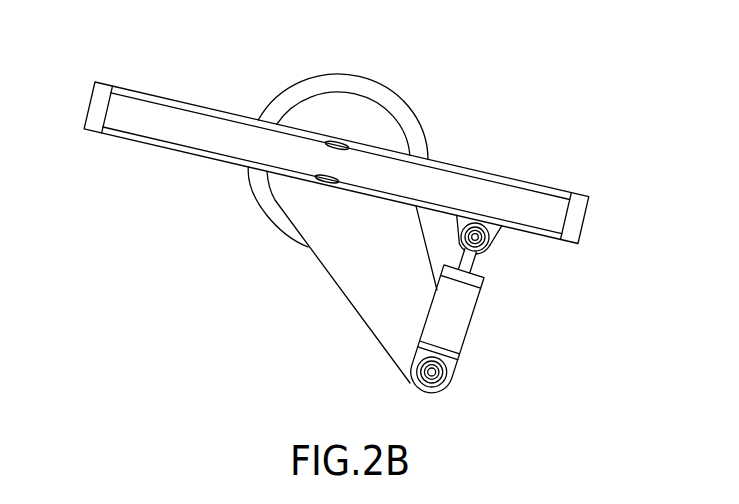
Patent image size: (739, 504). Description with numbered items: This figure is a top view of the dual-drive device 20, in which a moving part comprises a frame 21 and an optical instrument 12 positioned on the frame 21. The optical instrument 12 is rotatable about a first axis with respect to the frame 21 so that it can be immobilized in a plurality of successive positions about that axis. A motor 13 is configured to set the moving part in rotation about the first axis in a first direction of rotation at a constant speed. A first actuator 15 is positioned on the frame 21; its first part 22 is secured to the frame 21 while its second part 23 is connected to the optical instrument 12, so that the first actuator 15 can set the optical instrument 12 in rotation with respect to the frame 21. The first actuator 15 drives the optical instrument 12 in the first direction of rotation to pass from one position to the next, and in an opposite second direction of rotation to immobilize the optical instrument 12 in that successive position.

The dual-drive device 20 is at (104, 72).
The optical instrument 12 is at (131, 117).
The motor 13 is at (270, 103).
The frame 21 is at (326, 268).
The first part of the first actuator 22 is at (411, 384).
The second part of the first actuator 23 is at (488, 245).
The first actuator 15 is at (457, 328).